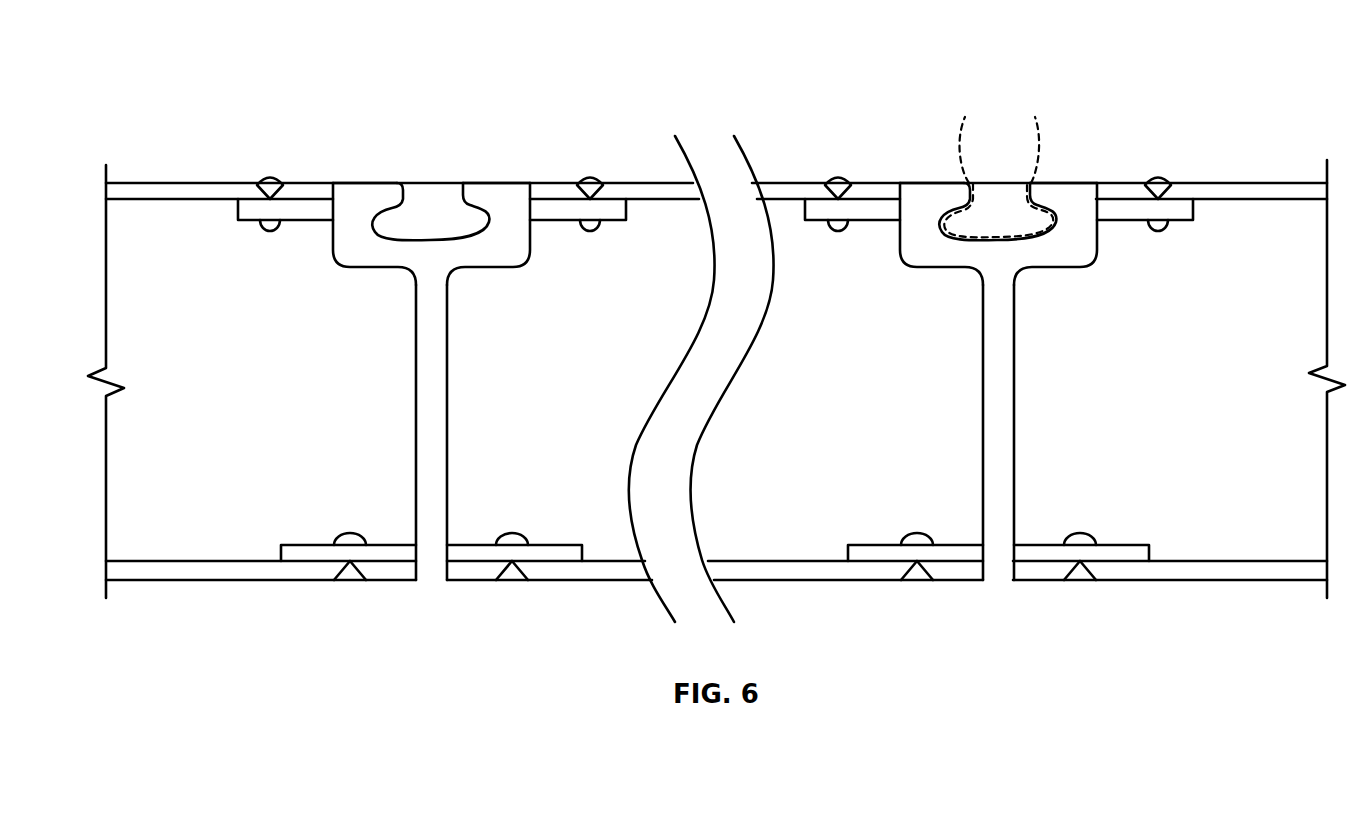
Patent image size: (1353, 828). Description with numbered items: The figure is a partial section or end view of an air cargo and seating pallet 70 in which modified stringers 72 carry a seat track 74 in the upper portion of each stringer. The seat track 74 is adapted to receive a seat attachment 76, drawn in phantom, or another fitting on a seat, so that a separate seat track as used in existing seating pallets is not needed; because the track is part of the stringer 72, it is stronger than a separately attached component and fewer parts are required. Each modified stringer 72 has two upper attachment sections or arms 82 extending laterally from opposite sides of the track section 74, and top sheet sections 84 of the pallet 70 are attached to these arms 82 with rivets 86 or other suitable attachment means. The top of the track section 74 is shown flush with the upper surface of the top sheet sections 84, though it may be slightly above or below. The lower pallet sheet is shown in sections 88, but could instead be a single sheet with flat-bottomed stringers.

The air cargo and seating pallet 70 is at (507, 165).
The modified stringer 72 is at (410, 381).
The seat track 74 is at (413, 238).
The seat attachment 76 is at (995, 151).
The upper attachment section 82 is at (873, 210).
The top sheet section 84 is at (1295, 180).
The rivet 86 is at (350, 565).
The lower pallet sheet section 88 is at (199, 572).